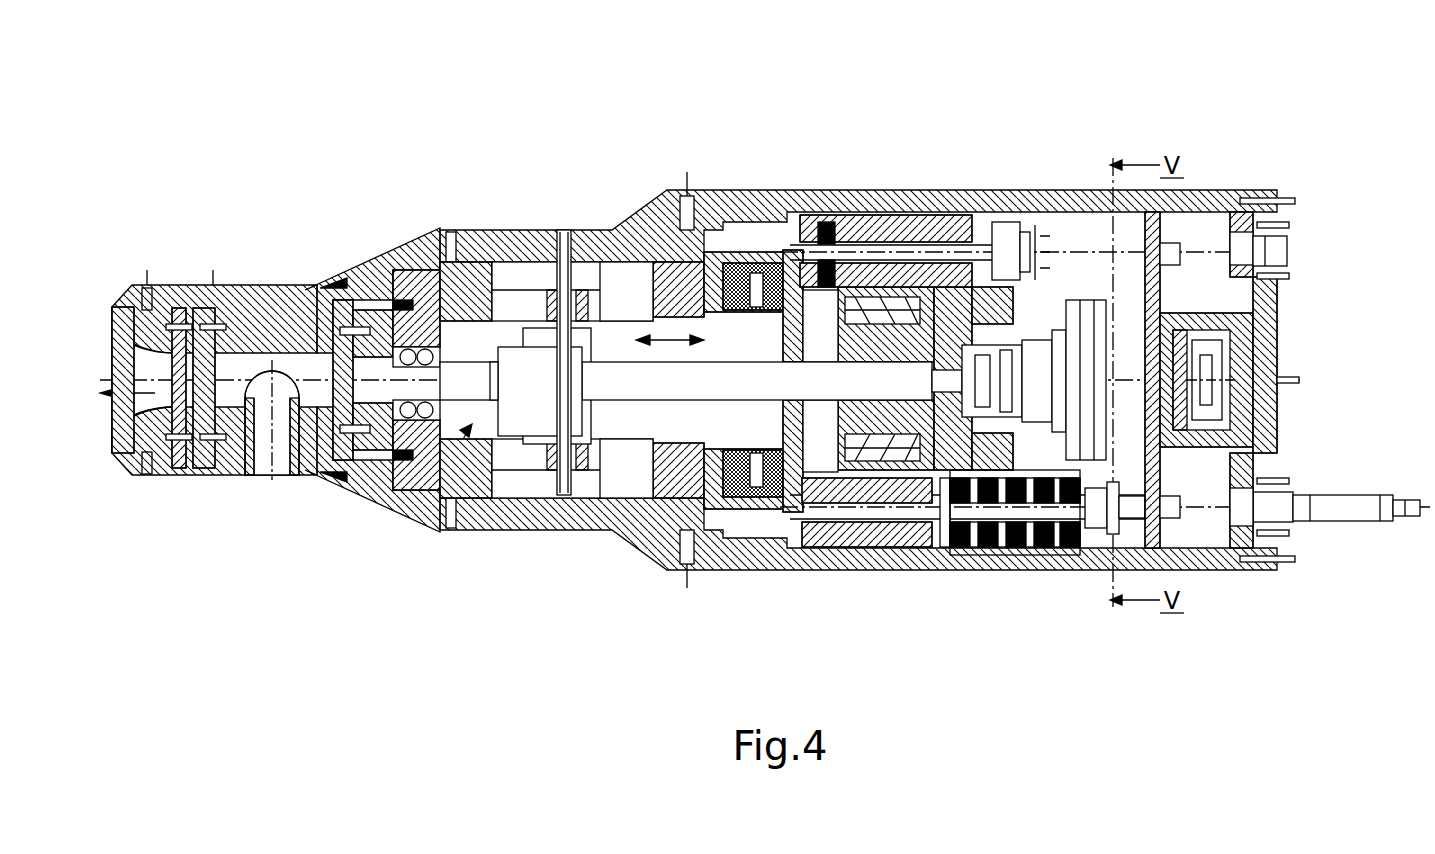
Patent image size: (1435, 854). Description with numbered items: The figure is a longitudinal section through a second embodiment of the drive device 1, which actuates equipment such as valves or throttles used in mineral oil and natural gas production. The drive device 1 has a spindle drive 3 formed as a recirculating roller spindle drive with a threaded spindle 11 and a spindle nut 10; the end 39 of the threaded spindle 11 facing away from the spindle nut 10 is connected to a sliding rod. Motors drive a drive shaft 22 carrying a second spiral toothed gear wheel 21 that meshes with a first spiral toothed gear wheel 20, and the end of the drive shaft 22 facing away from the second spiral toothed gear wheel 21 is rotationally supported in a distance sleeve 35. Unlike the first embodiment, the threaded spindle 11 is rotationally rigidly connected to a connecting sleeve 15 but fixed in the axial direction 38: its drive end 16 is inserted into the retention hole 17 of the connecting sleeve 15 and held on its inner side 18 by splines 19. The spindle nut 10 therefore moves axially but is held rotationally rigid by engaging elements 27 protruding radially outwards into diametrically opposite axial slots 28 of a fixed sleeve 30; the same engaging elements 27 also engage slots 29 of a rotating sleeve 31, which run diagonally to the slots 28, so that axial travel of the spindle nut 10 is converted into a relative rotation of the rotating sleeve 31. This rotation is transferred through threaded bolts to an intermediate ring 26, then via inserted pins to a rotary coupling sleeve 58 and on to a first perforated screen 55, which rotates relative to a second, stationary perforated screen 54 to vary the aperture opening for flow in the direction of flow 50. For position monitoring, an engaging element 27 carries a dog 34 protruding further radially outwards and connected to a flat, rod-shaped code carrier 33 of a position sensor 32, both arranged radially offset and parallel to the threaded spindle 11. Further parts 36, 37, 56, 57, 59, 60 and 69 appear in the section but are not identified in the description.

The drive device 1 is at (1275, 76).
The spindle drive 3 is at (444, 496).
The spindle nut 10 is at (540, 427).
The threaded spindle 11 is at (620, 380).
The connecting sleeve 15 is at (897, 278).
The drive end 16 is at (860, 548).
The retention hole 17 is at (953, 548).
The inner side 18 is at (962, 318).
The splines 19 is at (922, 548).
The first spiral toothed gear wheel 20 is at (1163, 477).
The second spiral toothed gear wheel 21 is at (1097, 548).
The drive shaft 22 is at (1013, 548).
The intermediate ring 26 is at (990, 300).
The engaging elements 27 is at (591, 275).
The slots 28 is at (624, 278).
The slots 29 is at (523, 312).
The fixed sleeve 30 is at (455, 352).
The rotating sleeve 31 is at (468, 478).
The position sensor 32 is at (1040, 228).
The code carrier 33 is at (838, 248).
The dog 34 is at (562, 273).
The distance sleeve 35 is at (893, 548).
The rotor 36 is at (830, 548).
The bearing housing 37 is at (905, 235).
The axial direction 38 is at (683, 262).
The end 39 is at (452, 345).
The direction of flow 50 is at (133, 402).
The second perforated screen 54 is at (190, 458).
The first perforated screen 55 is at (203, 455).
The bearing 56 is at (376, 470).
The bolt 57 is at (340, 440).
The rotary coupling sleeve 58 is at (270, 312).
The cover 59 is at (140, 465).
The seal 60 is at (398, 480).
The flange 69 is at (347, 340).